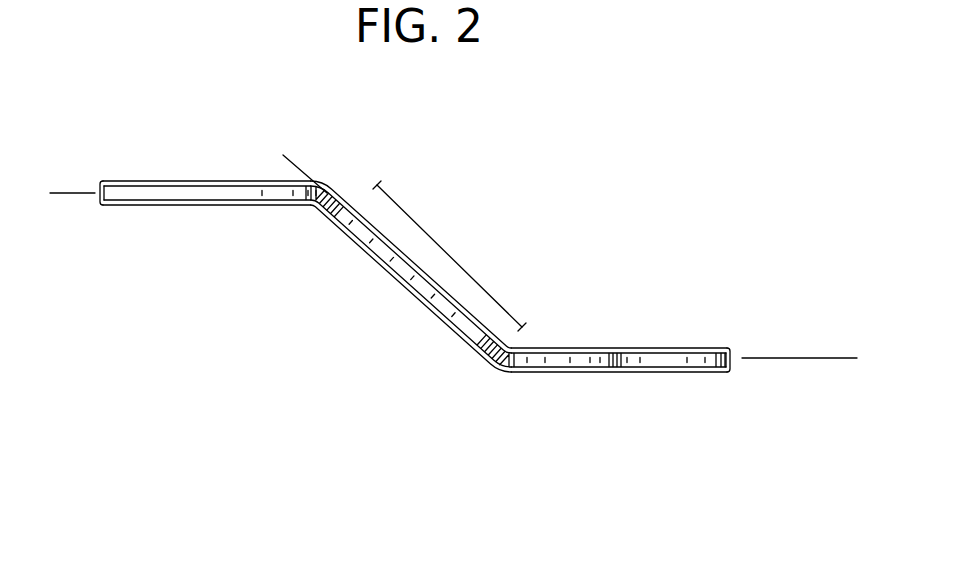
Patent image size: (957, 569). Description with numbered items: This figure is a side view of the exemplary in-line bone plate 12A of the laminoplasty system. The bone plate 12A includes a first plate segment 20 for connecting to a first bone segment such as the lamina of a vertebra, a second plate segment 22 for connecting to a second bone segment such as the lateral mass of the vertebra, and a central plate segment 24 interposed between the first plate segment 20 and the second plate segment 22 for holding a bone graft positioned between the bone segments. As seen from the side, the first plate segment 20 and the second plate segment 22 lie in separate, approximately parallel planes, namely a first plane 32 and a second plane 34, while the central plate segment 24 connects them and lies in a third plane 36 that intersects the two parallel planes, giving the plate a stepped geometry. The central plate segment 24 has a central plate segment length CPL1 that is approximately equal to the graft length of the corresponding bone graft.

The first plate segment 20 is at (183, 206).
The second plate segment 22 is at (573, 373).
The central plate segment 24 is at (418, 280).
The first plane 32 is at (71, 192).
The second plane 34 is at (760, 357).
The third plane 36 is at (307, 163).
The in-line bone plate 12A is at (461, 257).
The central plate segment length CPL1 is at (492, 295).